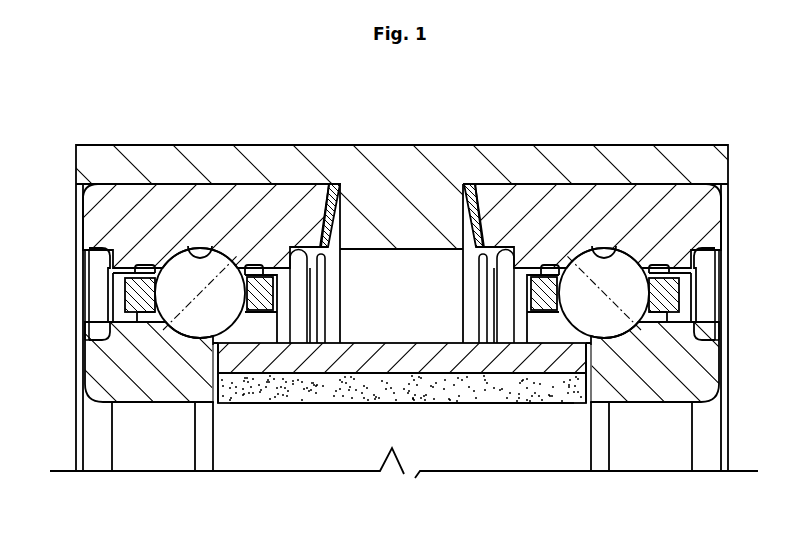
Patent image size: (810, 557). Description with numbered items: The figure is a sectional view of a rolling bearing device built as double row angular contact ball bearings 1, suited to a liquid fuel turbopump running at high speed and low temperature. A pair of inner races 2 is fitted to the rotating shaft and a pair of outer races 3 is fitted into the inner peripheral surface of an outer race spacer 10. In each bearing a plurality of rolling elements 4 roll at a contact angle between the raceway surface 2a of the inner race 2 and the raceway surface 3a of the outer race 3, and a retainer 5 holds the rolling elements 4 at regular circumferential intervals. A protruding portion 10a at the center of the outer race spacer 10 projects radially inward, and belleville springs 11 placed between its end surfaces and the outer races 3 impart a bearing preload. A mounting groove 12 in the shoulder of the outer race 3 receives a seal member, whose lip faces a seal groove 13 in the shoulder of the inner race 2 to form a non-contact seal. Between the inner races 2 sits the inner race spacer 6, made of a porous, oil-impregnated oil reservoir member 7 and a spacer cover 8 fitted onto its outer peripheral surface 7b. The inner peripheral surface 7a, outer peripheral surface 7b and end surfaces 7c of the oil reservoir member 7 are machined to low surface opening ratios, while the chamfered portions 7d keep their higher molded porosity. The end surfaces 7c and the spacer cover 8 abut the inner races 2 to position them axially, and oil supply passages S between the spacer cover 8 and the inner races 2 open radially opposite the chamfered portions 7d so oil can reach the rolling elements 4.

The angular contact ball bearing 1 is at (82, 205).
The inner race 2 is at (106, 372).
The raceway surface of the inner race 2a is at (178, 322).
The outer race 3 is at (100, 226).
The raceway surface of the outer race 3a is at (226, 258).
The rolling element 4 is at (182, 262).
The retainer 5 is at (133, 292).
The inner race spacer 6 is at (505, 517).
The oil reservoir member 7 is at (462, 395).
The inner peripheral surface 7a is at (314, 404).
The outer peripheral surface 7b is at (402, 368).
The end surface 7c is at (213, 345).
The chamfered portion 7d is at (209, 342).
The spacer cover 8 is at (497, 365).
The outer race spacer 10 is at (379, 160).
The protruding portion 10a is at (412, 228).
The belleville spring 11 is at (322, 186).
The mounting groove 12 is at (86, 264).
The seal groove 13 is at (100, 324).
The oil supply passage S is at (218, 345).